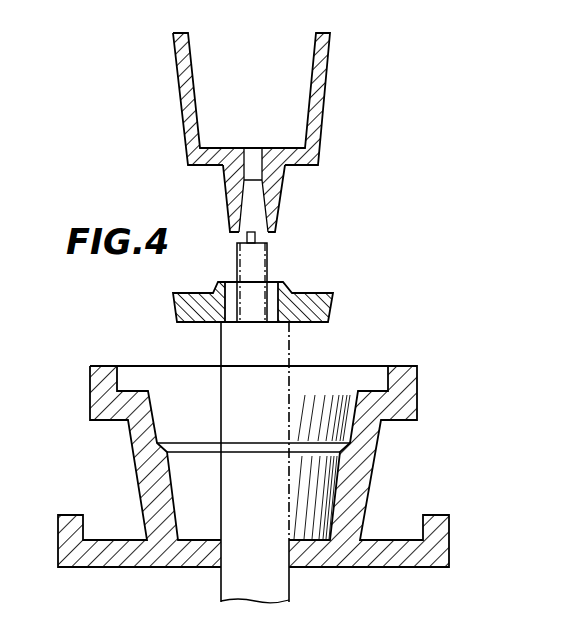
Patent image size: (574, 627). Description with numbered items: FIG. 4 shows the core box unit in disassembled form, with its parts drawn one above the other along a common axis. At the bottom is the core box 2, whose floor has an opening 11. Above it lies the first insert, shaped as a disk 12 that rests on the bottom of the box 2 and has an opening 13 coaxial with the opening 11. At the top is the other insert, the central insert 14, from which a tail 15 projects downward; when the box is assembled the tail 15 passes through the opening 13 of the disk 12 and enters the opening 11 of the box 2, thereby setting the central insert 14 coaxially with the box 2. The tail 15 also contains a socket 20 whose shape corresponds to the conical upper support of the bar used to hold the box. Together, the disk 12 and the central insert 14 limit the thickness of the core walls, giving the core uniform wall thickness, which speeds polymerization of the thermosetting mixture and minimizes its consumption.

The central insert 14 is at (316, 100).
The tail 15 is at (276, 214).
The socket 20 is at (247, 210).
The opening 13 is at (271, 287).
The disk 12 is at (334, 308).
The core box 2 is at (400, 367).
The opening 11 is at (219, 570).